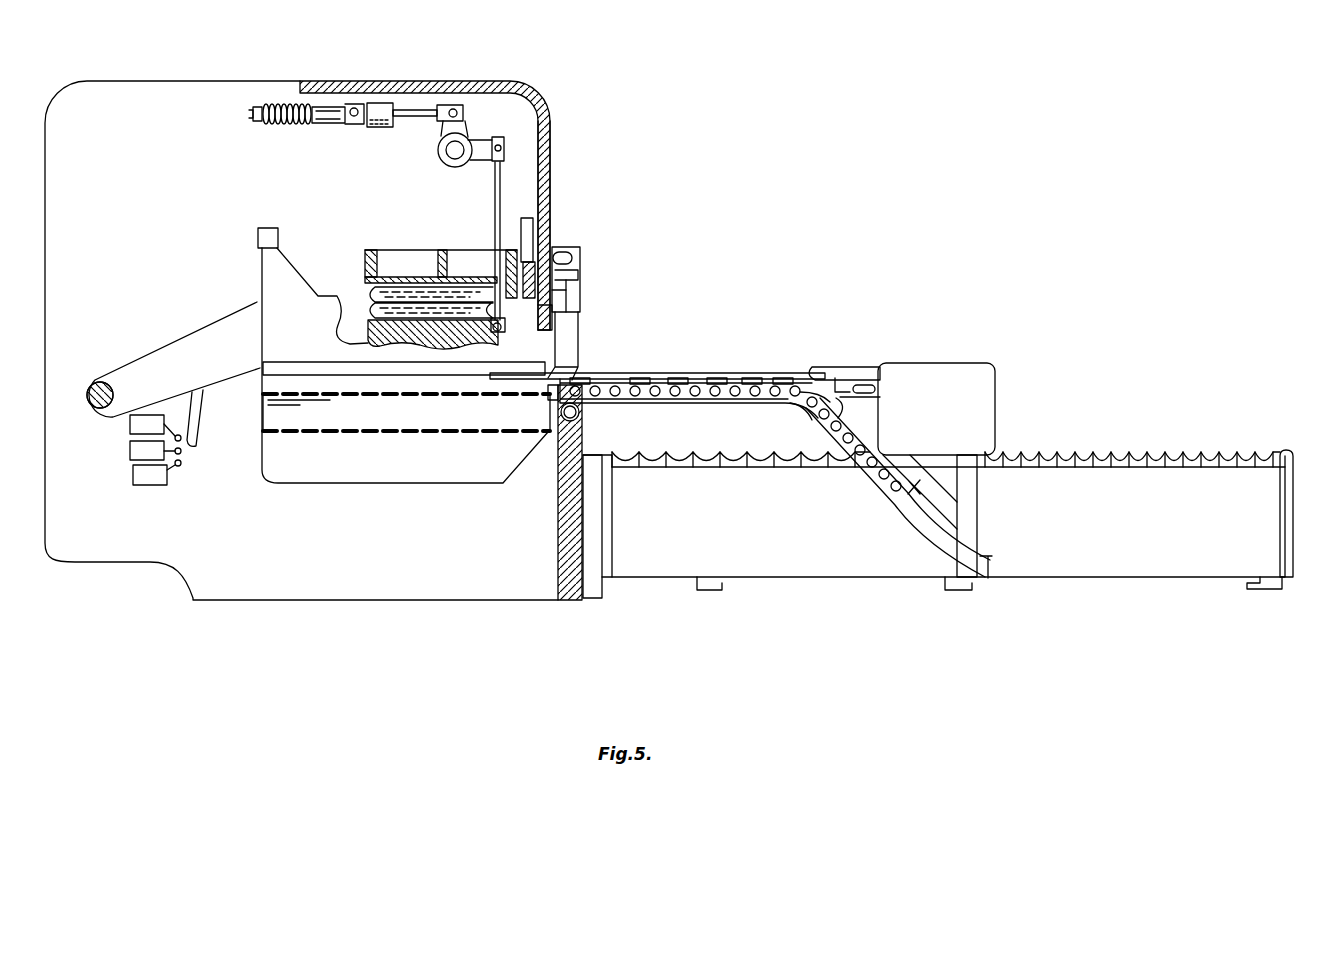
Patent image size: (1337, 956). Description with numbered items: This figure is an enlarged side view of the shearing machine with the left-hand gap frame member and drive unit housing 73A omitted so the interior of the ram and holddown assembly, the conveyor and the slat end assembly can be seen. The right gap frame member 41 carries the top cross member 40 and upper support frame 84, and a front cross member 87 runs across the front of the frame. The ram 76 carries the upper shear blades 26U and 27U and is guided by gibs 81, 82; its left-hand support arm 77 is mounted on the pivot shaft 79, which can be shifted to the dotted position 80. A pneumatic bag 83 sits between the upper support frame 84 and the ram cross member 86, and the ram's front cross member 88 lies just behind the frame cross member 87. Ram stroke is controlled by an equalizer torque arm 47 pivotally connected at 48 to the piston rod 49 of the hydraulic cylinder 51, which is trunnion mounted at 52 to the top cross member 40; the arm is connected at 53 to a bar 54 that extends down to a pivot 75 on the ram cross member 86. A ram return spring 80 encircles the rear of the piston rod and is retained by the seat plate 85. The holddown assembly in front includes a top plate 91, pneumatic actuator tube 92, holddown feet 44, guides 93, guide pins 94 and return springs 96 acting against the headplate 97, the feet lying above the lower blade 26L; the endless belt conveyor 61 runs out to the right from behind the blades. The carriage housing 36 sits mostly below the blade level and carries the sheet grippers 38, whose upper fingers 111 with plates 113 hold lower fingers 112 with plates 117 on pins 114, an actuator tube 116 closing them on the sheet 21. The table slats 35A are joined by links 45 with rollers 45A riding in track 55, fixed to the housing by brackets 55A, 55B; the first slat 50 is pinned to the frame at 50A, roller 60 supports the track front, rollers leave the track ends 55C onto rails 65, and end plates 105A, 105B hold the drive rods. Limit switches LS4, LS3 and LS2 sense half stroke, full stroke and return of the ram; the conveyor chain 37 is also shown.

The cross member 40 is at (410, 81).
The front cross member 87 is at (545, 152).
The seat plate 85 is at (262, 122).
The ram return spring 80 is at (284, 126).
The trunnions 52 is at (354, 120).
The power stroke control hydraulic cylinder 51 is at (376, 128).
The piston rod 49 is at (427, 122).
The pivotal connection 48 is at (463, 111).
The equalizer torque arm 47 is at (452, 158).
The pivotal connection 53 is at (504, 146).
The bar 54 is at (495, 206).
The right gap frame member 41 is at (352, 219).
The gib 82 is at (527, 222).
The front cross member of the ram 88 is at (530, 266).
The top plate 91 is at (572, 252).
The pneumatic actuator tube 92 is at (573, 258).
The holddown foot headplate 97 is at (580, 272).
The return springs 96 is at (572, 282).
The holddown foot guides 93 is at (580, 300).
The guide pins 94 is at (556, 330).
The holddown feet 44 is at (568, 333).
The upper support frame 84 is at (490, 276).
The pneumatic bag 83 is at (375, 292).
The ram cross member 86 is at (368, 338).
The pivotal connection 75 is at (491, 328).
The gib 81 is at (258, 240).
The ram 76 is at (258, 306).
The left-hand support arm 77 is at (175, 345).
The pivot shaft 79 is at (112, 390).
The limit switch LS2 is at (155, 427).
The limit switch LS4 is at (155, 450).
The limit switch LS3 is at (157, 472).
The upper side shear blade 27U is at (262, 370).
The upper front shear blade 26U is at (555, 374).
The lower front shear blade 26L is at (540, 396).
The endless belt conveyor 61 is at (334, 454).
The roller 60 is at (578, 418).
The pin 50A is at (553, 430).
The first slat 50 is at (598, 380).
The links 45 is at (598, 396).
The rollers 45A is at (692, 396).
The track 55 is at (652, 397).
The slats 35A is at (650, 380).
The conveyor chain 37 is at (704, 378).
The sheet 21 is at (694, 380).
The upper fingers 111 is at (820, 368).
The pins 114 is at (838, 376).
The upper finger plates 113 is at (868, 380).
The sheet grippers 38 is at (846, 317).
The pneumatic actuator tube 116 is at (825, 400).
The lower fingers 112 is at (818, 410).
The lower finger plates 117 is at (838, 415).
The housing 36 is at (955, 364).
The bracket 55A is at (978, 492).
The bracket 55B is at (920, 492).
The track ends 55C is at (992, 560).
The end plate 105A is at (612, 532).
The Y-axis drive unit housing 73A is at (1143, 573).
The end plate 105B is at (1280, 527).
The rails 65 is at (848, 588).